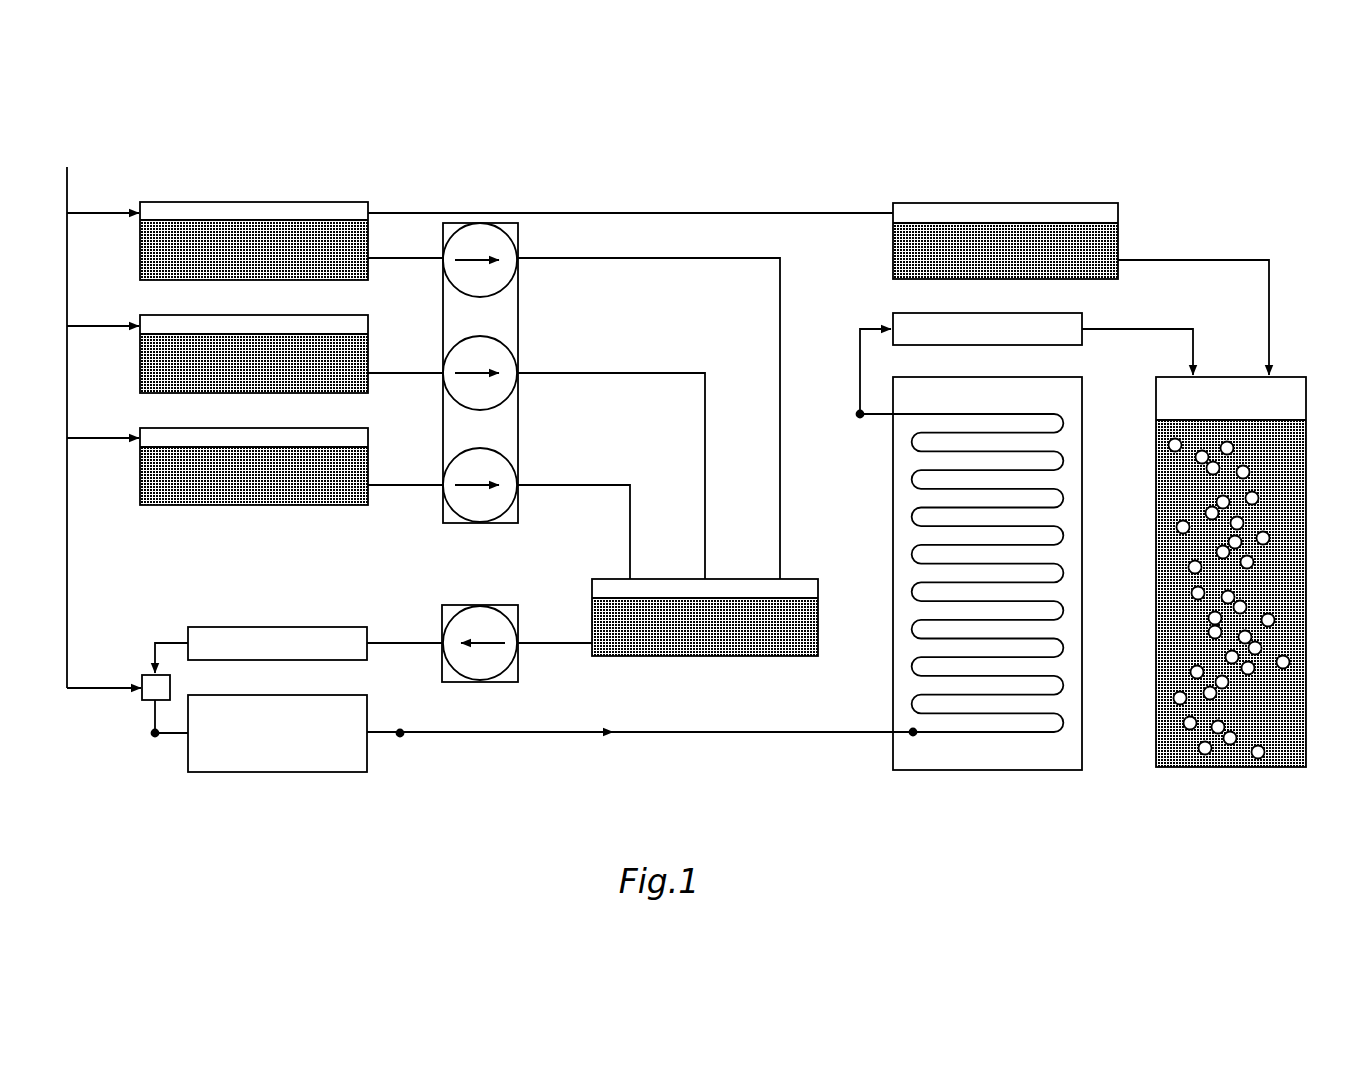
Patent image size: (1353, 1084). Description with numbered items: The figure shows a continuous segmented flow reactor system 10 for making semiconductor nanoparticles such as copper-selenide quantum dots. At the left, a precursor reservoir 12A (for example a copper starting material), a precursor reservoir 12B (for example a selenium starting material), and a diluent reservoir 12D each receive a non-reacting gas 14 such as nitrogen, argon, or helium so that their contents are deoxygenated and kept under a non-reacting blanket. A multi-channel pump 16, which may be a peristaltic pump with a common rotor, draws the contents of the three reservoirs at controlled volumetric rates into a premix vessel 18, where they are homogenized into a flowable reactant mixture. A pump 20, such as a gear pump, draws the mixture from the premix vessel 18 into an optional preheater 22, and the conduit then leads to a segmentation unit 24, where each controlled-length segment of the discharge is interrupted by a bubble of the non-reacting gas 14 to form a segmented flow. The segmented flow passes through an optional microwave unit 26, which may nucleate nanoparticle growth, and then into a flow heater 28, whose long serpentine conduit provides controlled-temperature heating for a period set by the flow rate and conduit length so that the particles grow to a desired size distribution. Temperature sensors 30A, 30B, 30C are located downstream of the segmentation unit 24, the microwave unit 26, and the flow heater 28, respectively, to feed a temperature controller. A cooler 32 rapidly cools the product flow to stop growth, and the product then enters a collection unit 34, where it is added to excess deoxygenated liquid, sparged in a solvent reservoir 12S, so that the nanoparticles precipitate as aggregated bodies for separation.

The continuous segmented flow reactor system 10 is at (1294, 177).
The precursor reservoir 12A is at (254, 241).
The precursor reservoir 12B is at (254, 354).
The diluent reservoir 12D is at (254, 466).
The solvent reservoir 12S is at (1005, 241).
The non-reacting gas 14 is at (97, 414).
The multi-channel pump 16 is at (519, 427).
The premix vessel 18 is at (705, 617).
The pump 20 is at (442, 609).
The preheater 22 is at (277, 643).
The segmentation unit 24 is at (170, 684).
The microwave unit 26 is at (277, 733).
The flow heater 28 is at (971, 573).
The temperature sensor 30A is at (149, 742).
The temperature sensor 30B is at (405, 742).
The temperature sensor 30C is at (856, 428).
The cooler 32 is at (987, 329).
The collection unit 34 is at (1231, 572).